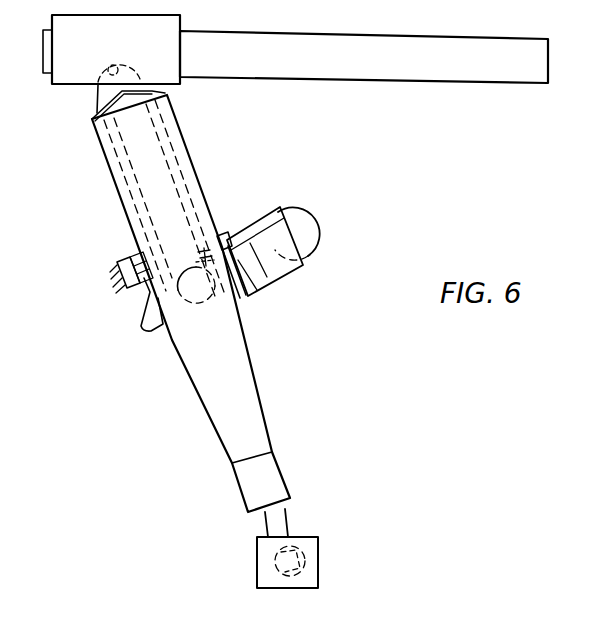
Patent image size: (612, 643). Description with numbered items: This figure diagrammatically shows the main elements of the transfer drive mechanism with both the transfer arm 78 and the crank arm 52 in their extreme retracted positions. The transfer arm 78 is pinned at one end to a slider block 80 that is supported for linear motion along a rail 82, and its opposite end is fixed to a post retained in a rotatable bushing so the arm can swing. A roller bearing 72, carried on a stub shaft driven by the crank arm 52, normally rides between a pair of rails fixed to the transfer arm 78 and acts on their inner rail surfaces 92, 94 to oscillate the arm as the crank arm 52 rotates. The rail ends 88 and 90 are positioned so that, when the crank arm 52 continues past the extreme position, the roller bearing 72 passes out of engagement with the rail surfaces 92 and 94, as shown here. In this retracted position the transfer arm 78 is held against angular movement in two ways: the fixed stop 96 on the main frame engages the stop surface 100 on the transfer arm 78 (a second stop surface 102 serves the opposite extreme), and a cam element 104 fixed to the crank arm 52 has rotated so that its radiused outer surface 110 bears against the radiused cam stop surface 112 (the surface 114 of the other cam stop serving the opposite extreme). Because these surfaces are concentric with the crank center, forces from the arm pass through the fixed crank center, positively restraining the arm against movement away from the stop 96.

The crank arm 52 is at (263, 205).
The roller bearing 72 is at (197, 308).
The transfer arm 78 is at (116, 199).
The slider block 80 is at (160, 86).
The rail 82 is at (276, 80).
The end of rail 88 is at (172, 340).
The end of rail 90 is at (198, 258).
The inner rail surface 92 is at (159, 238).
The inner rail surface 94 is at (172, 170).
The fixed stop 96 is at (130, 258).
The stop surface 100 is at (129, 260).
The stop surface 102 is at (224, 234).
The cam element 104 is at (266, 229).
The cam element outer surface 110 is at (268, 282).
The cam stop surface 112 is at (300, 268).
The cam stop surface 114 is at (142, 317).